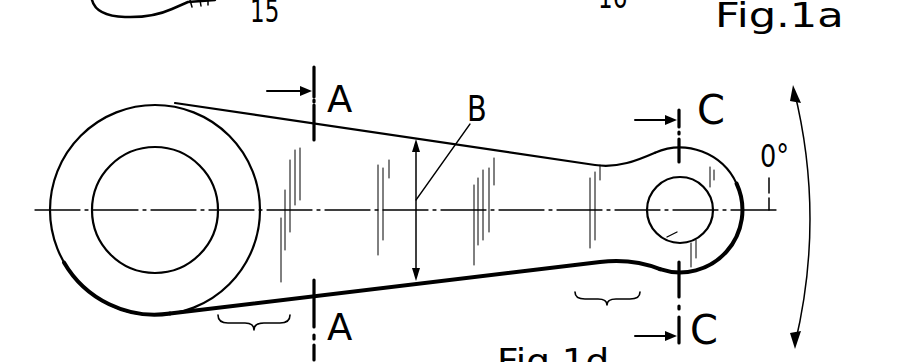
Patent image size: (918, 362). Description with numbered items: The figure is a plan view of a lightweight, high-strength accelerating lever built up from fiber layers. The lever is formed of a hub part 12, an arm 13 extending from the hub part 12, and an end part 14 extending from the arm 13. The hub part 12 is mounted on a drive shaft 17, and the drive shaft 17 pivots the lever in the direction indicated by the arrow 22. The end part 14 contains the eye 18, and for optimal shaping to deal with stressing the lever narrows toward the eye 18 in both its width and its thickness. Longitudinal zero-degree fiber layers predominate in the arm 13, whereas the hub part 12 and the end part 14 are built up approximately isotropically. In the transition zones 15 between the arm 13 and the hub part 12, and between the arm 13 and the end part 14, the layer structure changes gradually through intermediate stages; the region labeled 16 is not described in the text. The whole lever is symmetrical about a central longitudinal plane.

The hub part 12 is at (253, 86).
The arm 13 is at (615, 87).
The end part 14 is at (743, 87).
The transition zone 15 is at (301, 352).
The neck transition region 16 is at (607, 316).
The drive shaft 17 is at (132, 235).
The eye 18 is at (677, 232).
The arrow 22 is at (808, 140).